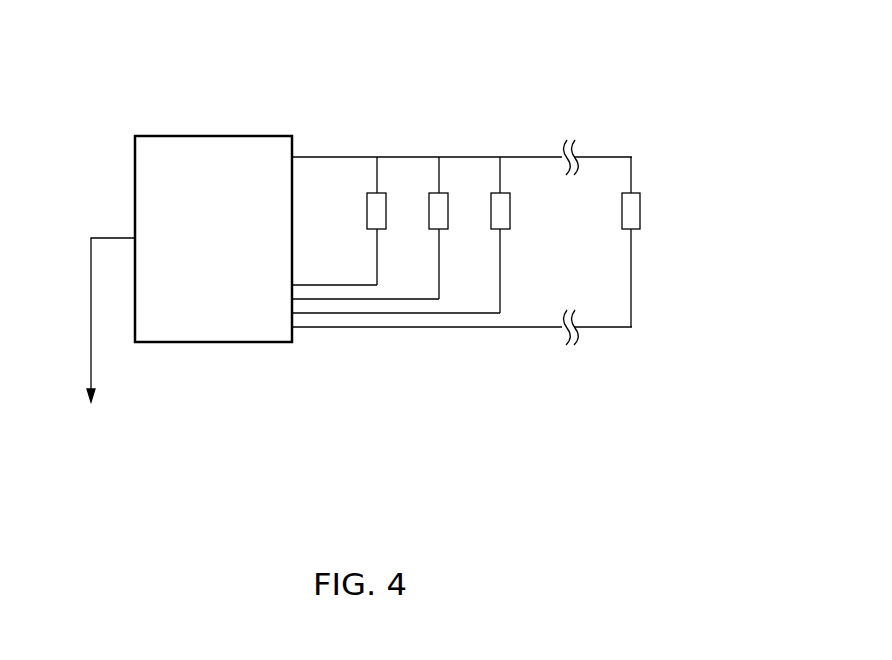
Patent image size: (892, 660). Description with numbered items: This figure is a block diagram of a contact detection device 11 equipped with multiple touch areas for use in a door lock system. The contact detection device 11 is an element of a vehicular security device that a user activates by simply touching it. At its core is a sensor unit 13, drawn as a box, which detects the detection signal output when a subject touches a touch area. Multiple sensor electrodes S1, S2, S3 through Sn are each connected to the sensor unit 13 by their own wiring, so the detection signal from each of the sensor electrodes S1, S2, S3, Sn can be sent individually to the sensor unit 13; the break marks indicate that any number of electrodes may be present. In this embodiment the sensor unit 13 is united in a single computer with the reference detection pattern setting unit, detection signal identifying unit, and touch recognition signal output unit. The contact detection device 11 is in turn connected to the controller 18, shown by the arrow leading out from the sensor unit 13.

The contact detection device 11 is at (672, 103).
The sensor unit 13 is at (198, 343).
The controller 18 is at (105, 341).
The sensor electrode S1 is at (378, 192).
The sensor electrode S2 is at (440, 192).
The sensor electrode S3 is at (500, 192).
The sensor electrode Sn is at (641, 202).